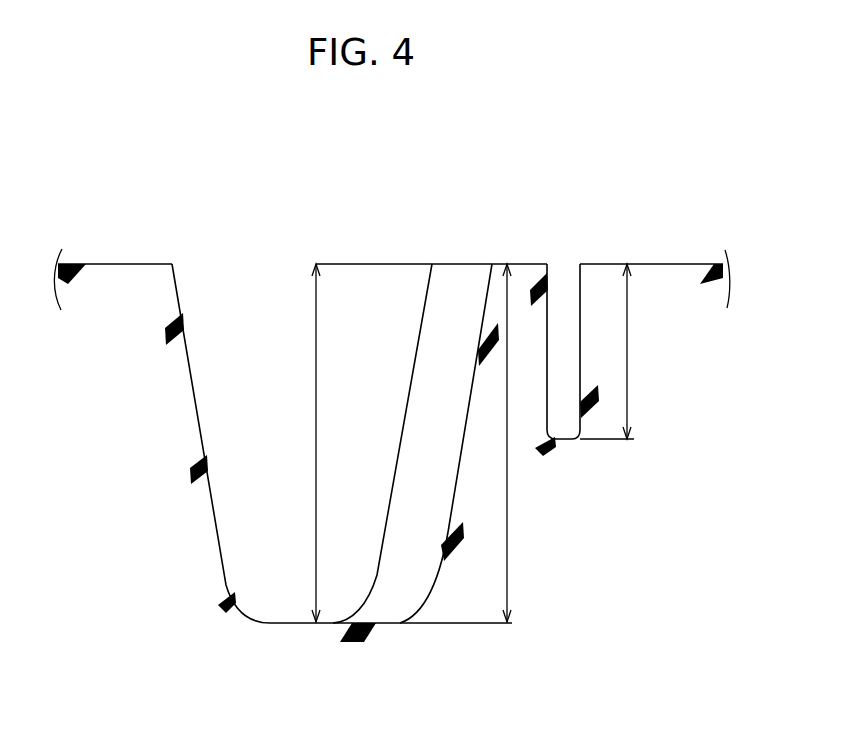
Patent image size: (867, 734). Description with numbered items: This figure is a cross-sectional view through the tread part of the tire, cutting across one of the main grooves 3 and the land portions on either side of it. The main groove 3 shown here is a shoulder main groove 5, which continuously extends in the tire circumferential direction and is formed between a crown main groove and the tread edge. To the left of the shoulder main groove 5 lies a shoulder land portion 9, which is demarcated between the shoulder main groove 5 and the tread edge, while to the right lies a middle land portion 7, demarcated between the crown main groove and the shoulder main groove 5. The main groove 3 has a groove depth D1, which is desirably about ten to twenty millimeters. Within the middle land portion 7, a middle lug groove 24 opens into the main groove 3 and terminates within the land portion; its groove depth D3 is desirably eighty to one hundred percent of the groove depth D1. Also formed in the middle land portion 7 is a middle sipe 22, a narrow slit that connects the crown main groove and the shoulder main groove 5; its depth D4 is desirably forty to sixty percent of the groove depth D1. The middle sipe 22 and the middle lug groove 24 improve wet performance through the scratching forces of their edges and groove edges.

The shoulder land portion 9 is at (115, 264).
The main groove 3 is at (240, 340).
The shoulder main groove 5 is at (298, 392).
The middle lug groove 24 is at (452, 317).
The middle sipe 22 is at (562, 317).
The middle land portion 7 is at (692, 264).
The groove depth of main groove D1 is at (354, 443).
The groove depth of middle lug groove D3 is at (508, 545).
The depth of middle sipe D4 is at (627, 350).